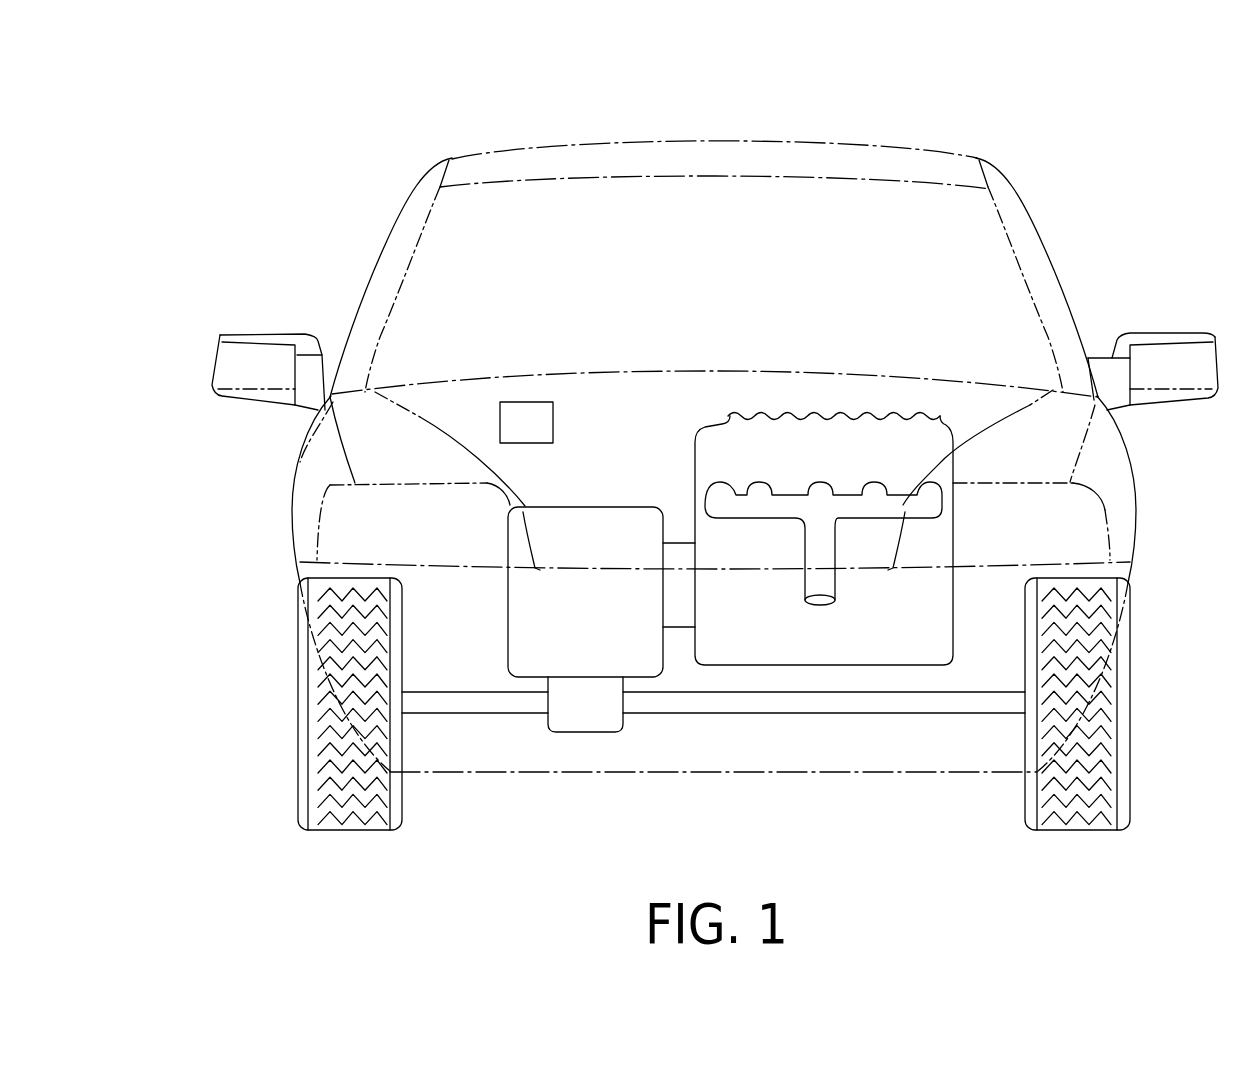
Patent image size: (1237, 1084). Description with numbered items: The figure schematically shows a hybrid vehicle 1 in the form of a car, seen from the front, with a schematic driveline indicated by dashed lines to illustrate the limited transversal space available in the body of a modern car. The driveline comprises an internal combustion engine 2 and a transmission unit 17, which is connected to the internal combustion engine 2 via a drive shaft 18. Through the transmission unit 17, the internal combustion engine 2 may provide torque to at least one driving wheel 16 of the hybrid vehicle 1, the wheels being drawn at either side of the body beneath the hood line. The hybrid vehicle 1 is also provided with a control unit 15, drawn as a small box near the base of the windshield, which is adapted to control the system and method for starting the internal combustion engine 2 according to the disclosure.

The hybrid vehicle 1 is at (1104, 143).
The internal combustion engine 2 is at (950, 528).
The control unit 15 is at (526, 402).
The driving wheel 16 is at (298, 762).
The transmission unit 17 is at (510, 541).
The drive shaft 18 is at (679, 628).